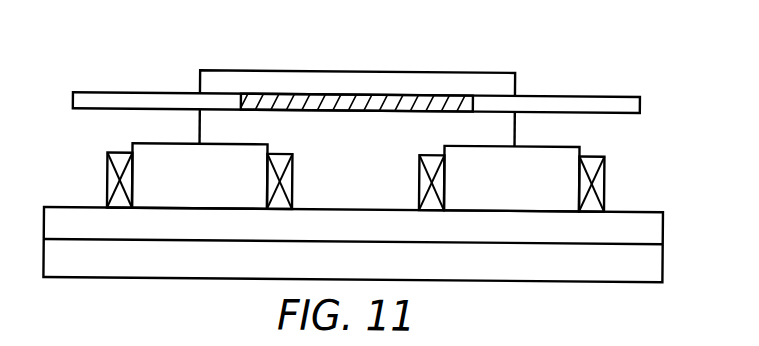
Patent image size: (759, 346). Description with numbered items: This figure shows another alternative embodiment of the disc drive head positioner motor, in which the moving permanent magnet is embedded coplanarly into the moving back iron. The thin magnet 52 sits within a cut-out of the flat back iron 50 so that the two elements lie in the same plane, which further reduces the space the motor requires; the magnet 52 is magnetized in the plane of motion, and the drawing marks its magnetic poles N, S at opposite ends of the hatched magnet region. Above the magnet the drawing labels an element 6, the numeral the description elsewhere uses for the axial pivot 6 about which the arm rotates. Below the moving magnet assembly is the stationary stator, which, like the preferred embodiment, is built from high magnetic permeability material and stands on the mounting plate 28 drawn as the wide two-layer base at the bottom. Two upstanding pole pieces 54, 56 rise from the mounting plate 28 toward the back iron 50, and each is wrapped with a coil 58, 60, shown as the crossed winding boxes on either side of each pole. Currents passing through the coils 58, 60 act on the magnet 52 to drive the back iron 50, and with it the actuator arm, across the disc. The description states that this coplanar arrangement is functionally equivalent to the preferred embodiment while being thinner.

The axial pivot 6 is at (358, 62).
The mounting plate 28 is at (353, 268).
The back iron 50 is at (358, 81).
The thin magnet 52 is at (360, 72).
The left electromagnet core 54 is at (214, 190).
The right electromagnet core 56 is at (531, 190).
The left coil winding 58 is at (167, 175).
The right coil winding 60 is at (542, 180).
The north pole of magnet N is at (291, 73).
The south pole of magnet S is at (427, 74).